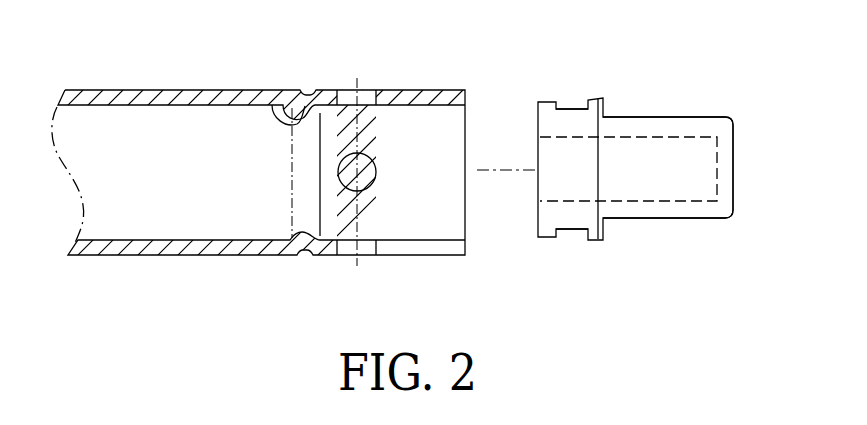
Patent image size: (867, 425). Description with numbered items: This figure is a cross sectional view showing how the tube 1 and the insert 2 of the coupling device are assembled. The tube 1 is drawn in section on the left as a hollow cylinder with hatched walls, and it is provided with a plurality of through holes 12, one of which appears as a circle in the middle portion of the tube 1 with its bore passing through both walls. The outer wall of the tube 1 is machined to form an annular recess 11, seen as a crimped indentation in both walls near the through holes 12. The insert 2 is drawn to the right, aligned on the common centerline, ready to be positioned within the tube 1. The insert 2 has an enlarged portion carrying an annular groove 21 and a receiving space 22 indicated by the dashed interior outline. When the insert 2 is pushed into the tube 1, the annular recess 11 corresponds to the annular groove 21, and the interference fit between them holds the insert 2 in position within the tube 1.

The tube 1 is at (191, 246).
The annular recess 11 is at (280, 118).
The through holes 12 is at (345, 100).
The insert 2 is at (628, 157).
The annular groove 21 is at (575, 109).
The receiving space 22 is at (650, 117).